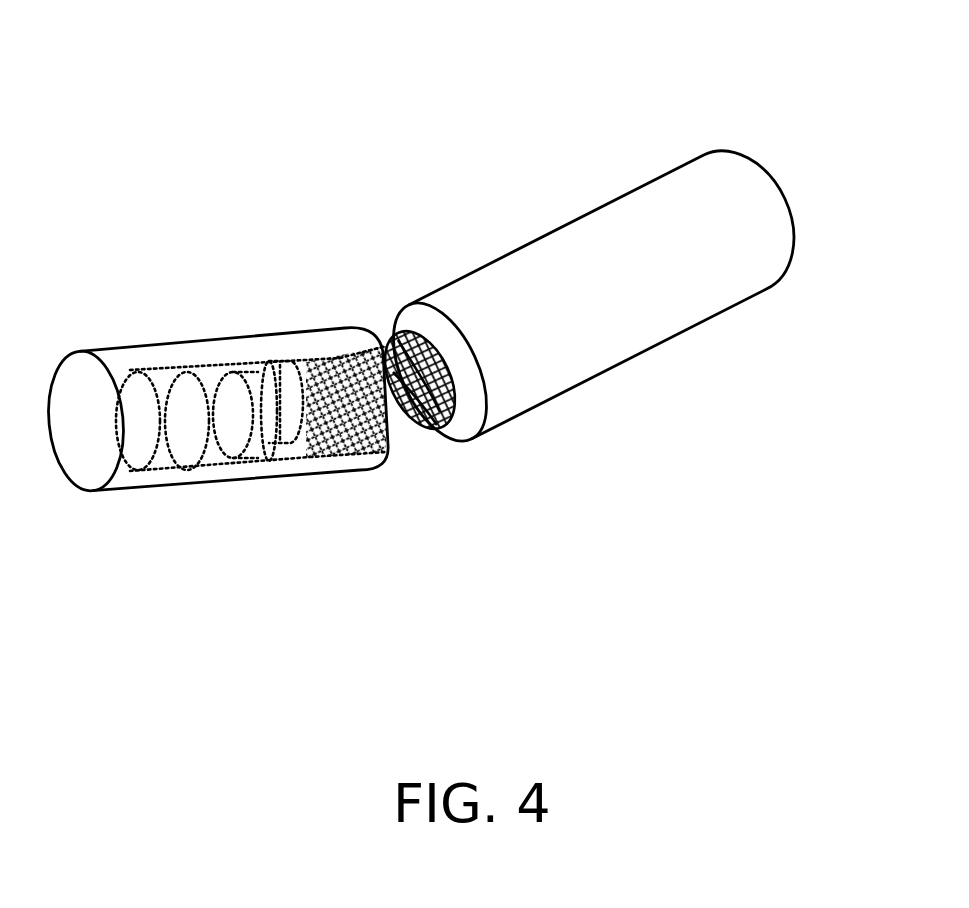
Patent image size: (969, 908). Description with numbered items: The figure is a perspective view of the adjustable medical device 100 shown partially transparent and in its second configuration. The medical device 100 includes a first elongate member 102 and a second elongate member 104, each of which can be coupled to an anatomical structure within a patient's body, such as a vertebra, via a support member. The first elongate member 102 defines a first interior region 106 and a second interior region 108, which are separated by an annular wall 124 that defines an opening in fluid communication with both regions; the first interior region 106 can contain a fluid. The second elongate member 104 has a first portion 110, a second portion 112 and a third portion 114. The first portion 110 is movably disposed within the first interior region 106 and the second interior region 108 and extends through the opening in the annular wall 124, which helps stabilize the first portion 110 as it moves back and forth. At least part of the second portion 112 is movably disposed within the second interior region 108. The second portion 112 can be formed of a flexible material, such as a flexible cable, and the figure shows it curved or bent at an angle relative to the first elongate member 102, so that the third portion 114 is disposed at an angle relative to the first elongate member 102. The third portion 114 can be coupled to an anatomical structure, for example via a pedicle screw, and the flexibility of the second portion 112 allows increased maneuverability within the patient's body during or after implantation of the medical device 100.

The adjustable medical device 100 is at (412, 118).
The first elongate member 102 is at (346, 484).
The second elongate member 104 is at (668, 355).
The first interior region 106 is at (163, 443).
The second interior region 108 is at (283, 453).
The first portion 110 is at (227, 445).
The second portion 112 is at (417, 432).
The third portion 114 is at (514, 422).
The annular wall 124 is at (253, 450).